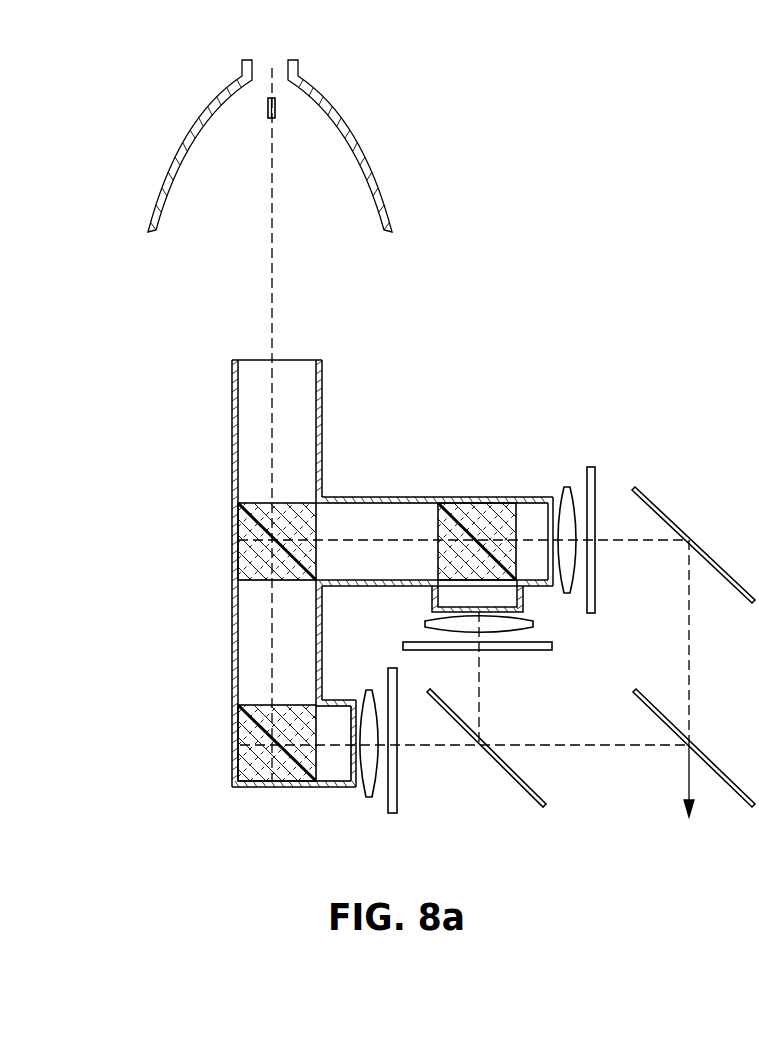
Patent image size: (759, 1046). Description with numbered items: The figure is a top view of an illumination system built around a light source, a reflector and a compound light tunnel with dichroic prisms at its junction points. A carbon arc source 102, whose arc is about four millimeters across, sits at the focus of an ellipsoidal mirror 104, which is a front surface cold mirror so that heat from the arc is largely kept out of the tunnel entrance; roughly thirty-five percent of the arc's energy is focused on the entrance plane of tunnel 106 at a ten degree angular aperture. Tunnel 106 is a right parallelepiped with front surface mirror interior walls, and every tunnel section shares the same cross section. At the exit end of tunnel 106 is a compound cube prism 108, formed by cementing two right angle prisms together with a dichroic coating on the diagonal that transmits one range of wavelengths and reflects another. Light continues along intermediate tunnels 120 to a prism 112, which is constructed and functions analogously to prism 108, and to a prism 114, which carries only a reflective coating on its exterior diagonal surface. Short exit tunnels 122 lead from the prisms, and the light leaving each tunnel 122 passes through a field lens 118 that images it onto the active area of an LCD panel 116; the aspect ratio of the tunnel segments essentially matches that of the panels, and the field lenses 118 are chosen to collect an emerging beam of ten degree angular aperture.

The carbon arc source 102 is at (268, 108).
The ellipsoidal mirror 104 is at (360, 132).
The tunnel 106 is at (322, 387).
The compound cube prism 108 is at (230, 542).
The prism 112 is at (465, 501).
The prism 114 is at (232, 723).
The LCD panels 116 is at (597, 499).
The field lens 118 is at (563, 487).
The tunnels 120 is at (342, 512).
The tunnels 122 is at (505, 598).